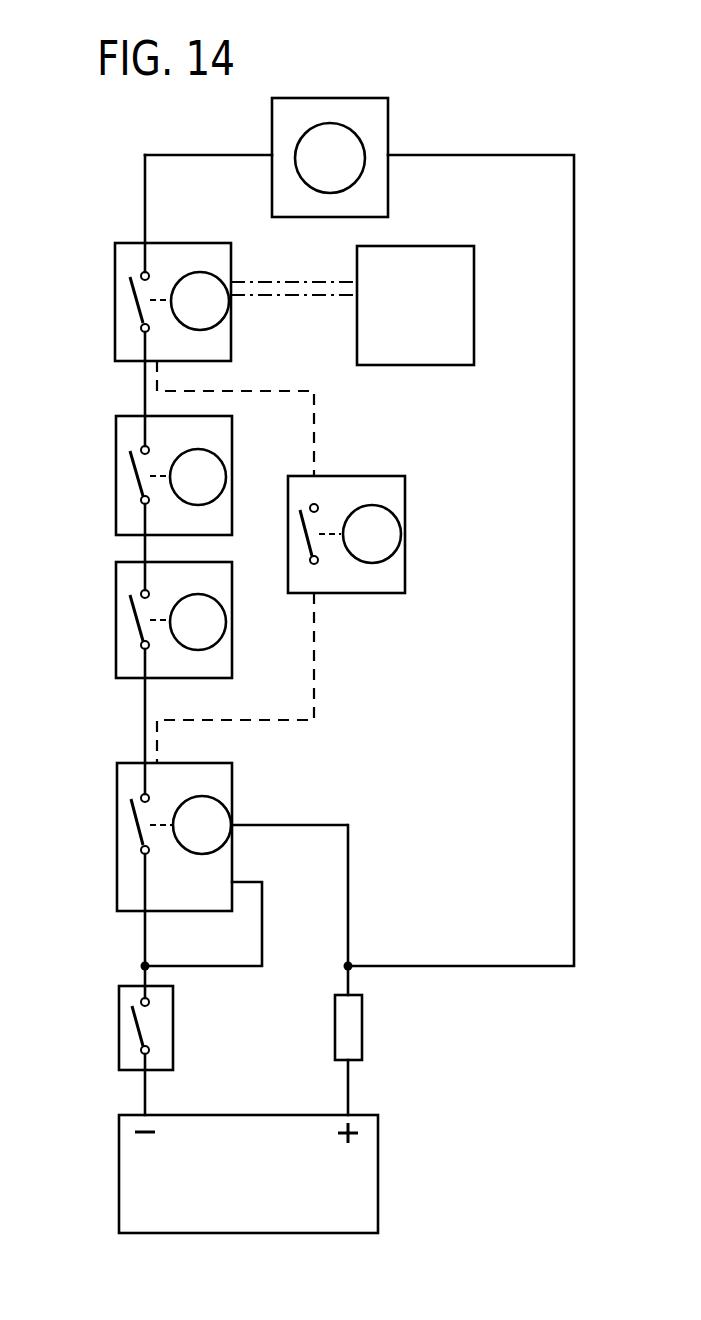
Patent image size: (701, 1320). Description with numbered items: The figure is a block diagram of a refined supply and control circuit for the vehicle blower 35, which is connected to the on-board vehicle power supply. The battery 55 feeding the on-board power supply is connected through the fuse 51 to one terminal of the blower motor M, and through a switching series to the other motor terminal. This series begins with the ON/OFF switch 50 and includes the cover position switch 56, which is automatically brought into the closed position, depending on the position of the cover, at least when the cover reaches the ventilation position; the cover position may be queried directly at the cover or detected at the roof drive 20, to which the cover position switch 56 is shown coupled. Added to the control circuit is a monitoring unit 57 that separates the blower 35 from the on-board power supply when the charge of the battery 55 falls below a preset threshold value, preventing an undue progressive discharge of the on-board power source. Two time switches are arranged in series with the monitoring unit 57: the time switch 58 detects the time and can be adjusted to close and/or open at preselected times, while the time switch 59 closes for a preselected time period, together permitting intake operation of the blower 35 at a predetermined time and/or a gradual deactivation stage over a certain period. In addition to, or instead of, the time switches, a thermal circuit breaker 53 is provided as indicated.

The blower 35 is at (376, 118).
The roof drive 20 is at (455, 352).
The cover position switch 56 is at (115, 338).
The time switch 59 is at (118, 508).
The time switch 58 is at (122, 655).
The thermal circuit breaker 53 is at (396, 575).
The monitoring unit 57 is at (122, 882).
The ON/OFF switch 50 is at (120, 1056).
The fuse 51 is at (355, 1045).
The battery 55 is at (258, 1207).